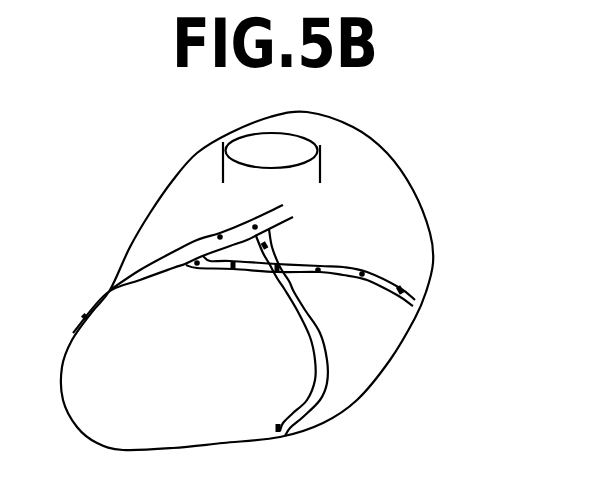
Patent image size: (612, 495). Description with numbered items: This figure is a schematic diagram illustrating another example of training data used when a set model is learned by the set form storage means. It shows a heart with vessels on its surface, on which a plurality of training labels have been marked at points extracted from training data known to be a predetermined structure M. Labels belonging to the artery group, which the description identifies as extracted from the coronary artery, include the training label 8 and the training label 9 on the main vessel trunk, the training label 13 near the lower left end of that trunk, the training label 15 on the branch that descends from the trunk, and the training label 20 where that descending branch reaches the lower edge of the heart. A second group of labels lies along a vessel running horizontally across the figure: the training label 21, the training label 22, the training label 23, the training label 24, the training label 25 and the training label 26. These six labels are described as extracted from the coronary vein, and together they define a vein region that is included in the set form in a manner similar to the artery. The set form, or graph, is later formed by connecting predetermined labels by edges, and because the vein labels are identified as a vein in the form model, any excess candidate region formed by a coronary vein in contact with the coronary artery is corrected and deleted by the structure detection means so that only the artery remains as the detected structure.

The training label T13 13 is at (173, 269).
The training label T9 9 is at (213, 225).
The training label T8 8 is at (254, 214).
The training label T15 15 is at (279, 243).
The training label T21 21 is at (192, 276).
The training label T22 22 is at (229, 279).
The training label T23 23 is at (267, 280).
The training label T24 24 is at (329, 282).
The training label T25 25 is at (372, 260).
The training label T26 26 is at (411, 279).
The training label T20 20 is at (286, 332).